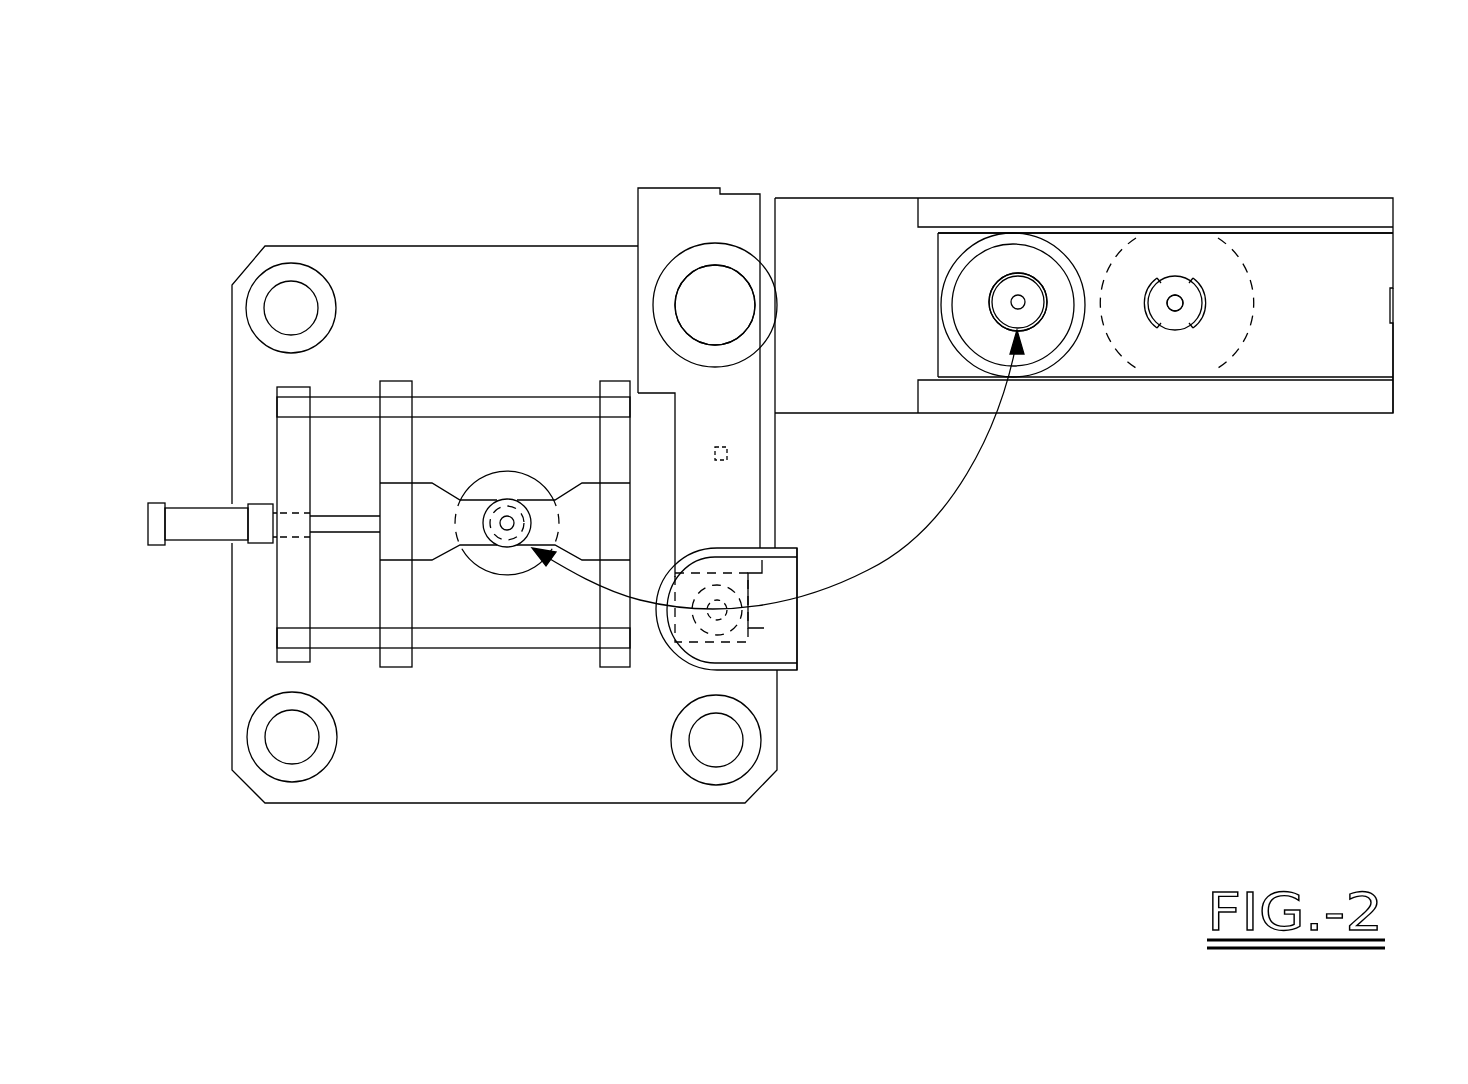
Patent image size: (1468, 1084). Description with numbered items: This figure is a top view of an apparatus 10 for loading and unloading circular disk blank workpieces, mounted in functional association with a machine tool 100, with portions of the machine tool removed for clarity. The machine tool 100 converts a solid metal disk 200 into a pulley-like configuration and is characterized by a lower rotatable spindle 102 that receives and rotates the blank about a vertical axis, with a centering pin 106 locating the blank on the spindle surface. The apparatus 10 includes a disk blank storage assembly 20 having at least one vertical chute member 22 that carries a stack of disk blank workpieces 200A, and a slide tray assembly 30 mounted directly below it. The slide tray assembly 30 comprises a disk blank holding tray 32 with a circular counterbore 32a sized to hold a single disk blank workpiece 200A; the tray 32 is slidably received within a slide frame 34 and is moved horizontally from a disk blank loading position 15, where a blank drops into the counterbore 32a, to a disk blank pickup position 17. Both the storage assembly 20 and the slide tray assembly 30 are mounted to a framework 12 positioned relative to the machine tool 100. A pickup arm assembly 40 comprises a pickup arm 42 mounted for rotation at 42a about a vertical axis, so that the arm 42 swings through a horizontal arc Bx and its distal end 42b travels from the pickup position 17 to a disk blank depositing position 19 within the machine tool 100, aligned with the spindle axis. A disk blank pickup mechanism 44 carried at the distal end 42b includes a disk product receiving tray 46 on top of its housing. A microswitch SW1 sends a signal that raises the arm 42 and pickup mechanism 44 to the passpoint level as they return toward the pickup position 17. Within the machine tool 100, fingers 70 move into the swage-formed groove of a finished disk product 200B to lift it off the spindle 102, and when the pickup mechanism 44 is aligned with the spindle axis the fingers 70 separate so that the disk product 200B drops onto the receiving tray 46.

The machine tool 100 is at (320, 198).
The framework 12 is at (820, 192).
The pickup arm 42 is at (743, 437).
The rotational mount of pickup arm 42a is at (727, 307).
The slide tray assembly 30 is at (1088, 432).
The slide frame 34 is at (1342, 395).
The disk blank storage assembly 20 is at (1245, 228).
The disk blank holding tray 32 is at (998, 255).
The counterbore 32a is at (988, 293).
The disk blank pickup position 17 is at (1019, 295).
The disk blank workpiece 200A is at (1030, 292).
The vertical chute member 22 is at (1197, 282).
The disk blank loading position 15 is at (1178, 293).
The disk blank 200 is at (1175, 330).
The apparatus 10 is at (1250, 578).
The fingers 70 is at (540, 483).
The disk blank depositing position 19 is at (500, 513).
The finished disk product 200B is at (506, 516).
The centering pin 106 is at (500, 540).
The spindle 102 is at (515, 573).
The disk product receiving tray 46 is at (780, 565).
The disk blank pickup mechanism 44 is at (797, 670).
The pickup arm assembly 40 is at (812, 567).
The distal end of pickup arm 42b is at (764, 628).
The microswitch SW1 is at (722, 458).
The horizontal arc Bx is at (955, 497).